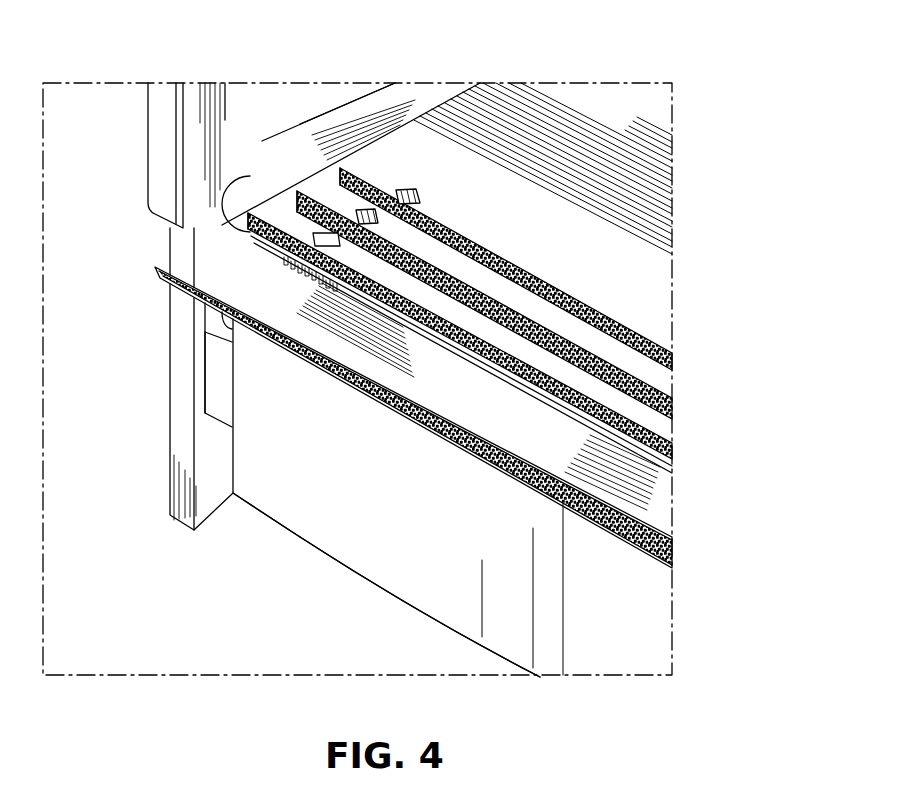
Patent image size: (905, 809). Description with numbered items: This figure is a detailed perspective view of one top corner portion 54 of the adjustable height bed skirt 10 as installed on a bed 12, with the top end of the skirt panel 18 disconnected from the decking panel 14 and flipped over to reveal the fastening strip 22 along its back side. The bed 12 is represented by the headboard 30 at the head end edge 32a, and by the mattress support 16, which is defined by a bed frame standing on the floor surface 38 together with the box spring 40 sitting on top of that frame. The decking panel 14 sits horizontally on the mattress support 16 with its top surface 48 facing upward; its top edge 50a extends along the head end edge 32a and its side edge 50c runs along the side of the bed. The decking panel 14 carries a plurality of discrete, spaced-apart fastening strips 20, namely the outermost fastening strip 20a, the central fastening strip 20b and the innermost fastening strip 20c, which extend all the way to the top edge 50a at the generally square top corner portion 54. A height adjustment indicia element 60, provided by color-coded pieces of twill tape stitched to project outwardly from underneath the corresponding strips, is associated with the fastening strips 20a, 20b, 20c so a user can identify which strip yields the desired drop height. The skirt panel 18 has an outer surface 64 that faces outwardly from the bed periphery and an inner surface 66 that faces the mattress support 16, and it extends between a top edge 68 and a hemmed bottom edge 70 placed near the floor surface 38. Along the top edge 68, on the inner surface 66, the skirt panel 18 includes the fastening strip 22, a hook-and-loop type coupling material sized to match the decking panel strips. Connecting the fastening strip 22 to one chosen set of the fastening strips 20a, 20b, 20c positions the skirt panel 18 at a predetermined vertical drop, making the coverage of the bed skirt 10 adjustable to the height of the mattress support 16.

The adjustable height bed skirt 10 is at (690, 97).
The bed 12 is at (168, 299).
The decking panel 14 is at (455, 95).
The mattress support 16 is at (220, 359).
The skirt panel 18 is at (295, 539).
The fastening strips 20 is at (492, 315).
The outermost fastening strip 20a is at (673, 448).
The central fastening strip 20b is at (673, 401).
The innermost fastening strip 20c is at (673, 355).
The fastening strip 22 is at (372, 400).
The headboard 30 is at (148, 112).
The head end edge 32a is at (337, 115).
The floor surface 38 is at (280, 629).
The box spring 40 is at (403, 104).
The top surface 48 is at (580, 239).
The top edge 50a is at (373, 133).
The side edge 50c is at (665, 473).
The top corner portions 54 is at (157, 262).
The height adjustment indicia element 60 is at (322, 233).
The outer surface 64 is at (307, 513).
The inner surface 66 is at (492, 402).
The top edge 68 is at (342, 372).
The bottom edge 70 is at (373, 587).